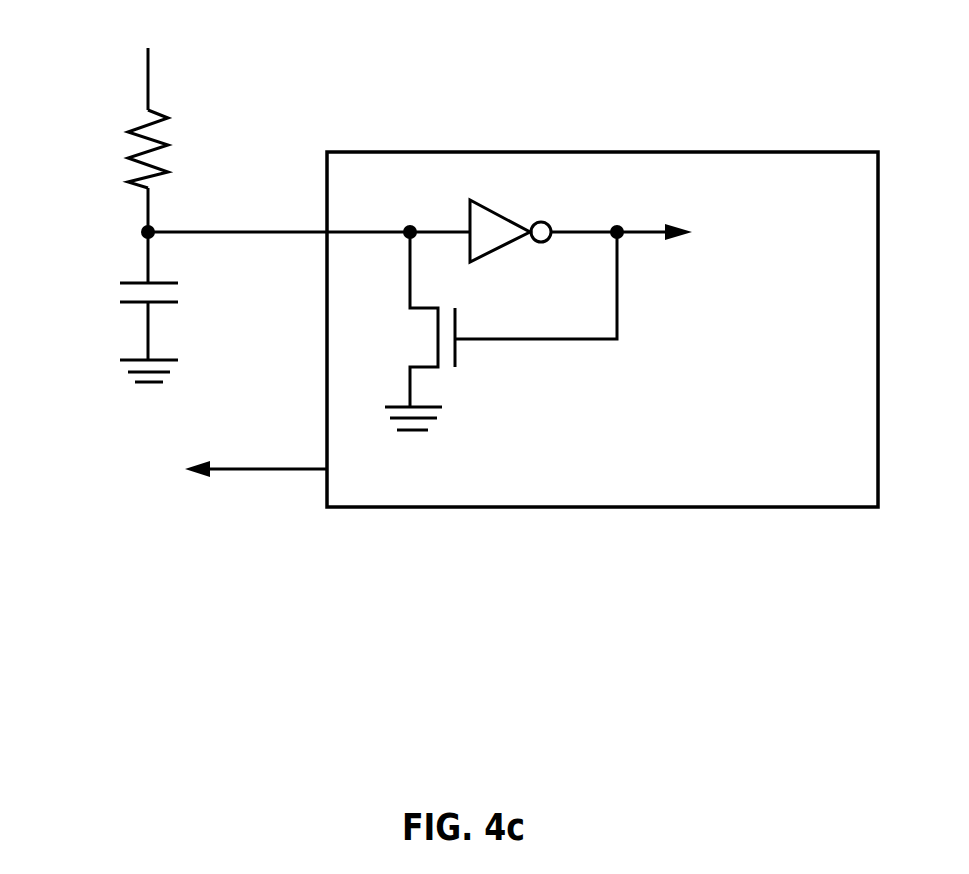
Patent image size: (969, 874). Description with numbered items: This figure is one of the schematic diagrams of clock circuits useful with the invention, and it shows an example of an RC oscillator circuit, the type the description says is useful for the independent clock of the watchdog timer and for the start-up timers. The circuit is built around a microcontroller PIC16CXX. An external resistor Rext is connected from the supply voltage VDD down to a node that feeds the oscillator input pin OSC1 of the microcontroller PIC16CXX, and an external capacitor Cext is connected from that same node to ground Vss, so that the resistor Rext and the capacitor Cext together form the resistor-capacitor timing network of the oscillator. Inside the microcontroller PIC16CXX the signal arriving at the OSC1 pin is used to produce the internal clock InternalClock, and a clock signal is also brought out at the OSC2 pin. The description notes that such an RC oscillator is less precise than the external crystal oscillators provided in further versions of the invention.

The external resistor Rext is at (101, 196).
The external capacitor Cext is at (106, 315).
The supply voltage VDD is at (149, 57).
The ground reference Vss is at (116, 369).
The oscillator input pin OSC1 is at (409, 210).
The OSC2/CLKOUT output pin (Fosc/4) OSC2 is at (398, 489).
The internal clock output InternalClock is at (769, 228).
The microcontroller PIC16CXX is at (602, 329).